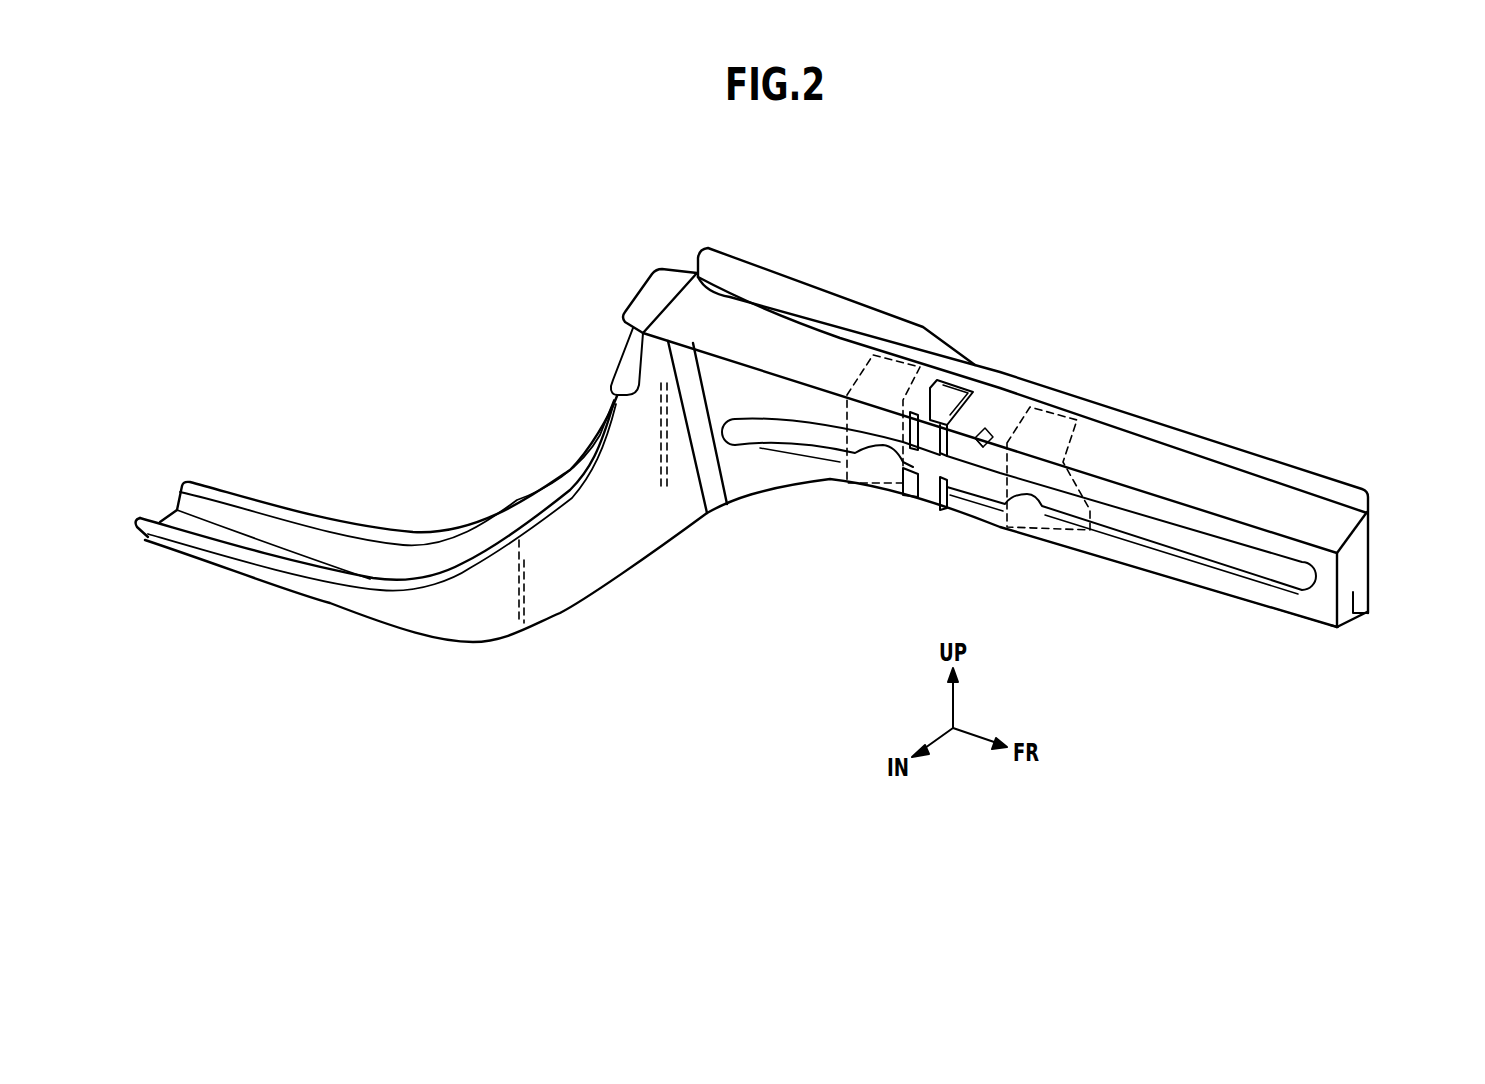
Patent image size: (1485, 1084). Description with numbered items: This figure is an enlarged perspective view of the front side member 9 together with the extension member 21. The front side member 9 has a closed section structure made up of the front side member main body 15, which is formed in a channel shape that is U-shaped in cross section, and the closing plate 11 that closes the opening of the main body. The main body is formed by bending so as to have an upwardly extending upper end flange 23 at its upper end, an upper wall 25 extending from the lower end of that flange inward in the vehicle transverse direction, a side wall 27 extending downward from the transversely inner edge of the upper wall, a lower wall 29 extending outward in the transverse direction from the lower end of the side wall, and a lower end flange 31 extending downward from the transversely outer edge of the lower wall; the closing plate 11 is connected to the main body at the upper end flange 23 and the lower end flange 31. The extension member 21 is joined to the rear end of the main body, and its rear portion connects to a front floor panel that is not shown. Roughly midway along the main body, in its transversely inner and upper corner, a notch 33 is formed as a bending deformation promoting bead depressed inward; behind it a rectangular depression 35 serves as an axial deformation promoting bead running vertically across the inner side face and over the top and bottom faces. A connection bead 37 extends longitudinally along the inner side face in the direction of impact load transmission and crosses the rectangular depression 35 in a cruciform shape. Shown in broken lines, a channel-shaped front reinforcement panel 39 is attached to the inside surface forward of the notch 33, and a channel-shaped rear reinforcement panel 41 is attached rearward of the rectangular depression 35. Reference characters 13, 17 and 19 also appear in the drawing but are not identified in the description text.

The front side member 9 is at (1312, 436).
The closing plate 11 is at (1353, 565).
The upper flange lip 13 is at (803, 290).
The front side member main body 15 is at (1189, 589).
The mounting tab 17 is at (667, 280).
The connecting strut 19 is at (722, 492).
The extension member 21 is at (606, 588).
The upper end flange 23 is at (1223, 452).
The upper wall 25 is at (1345, 521).
The side wall 27 is at (1285, 608).
The lower wall 29 is at (1341, 624).
The lower end flange 31 is at (1366, 603).
The notch 33 is at (986, 430).
The rectangular depression 35 is at (957, 385).
The connection bead 37 is at (976, 483).
The front reinforcement panel 39 is at (1049, 545).
The rear reinforcement panel 41 is at (862, 490).